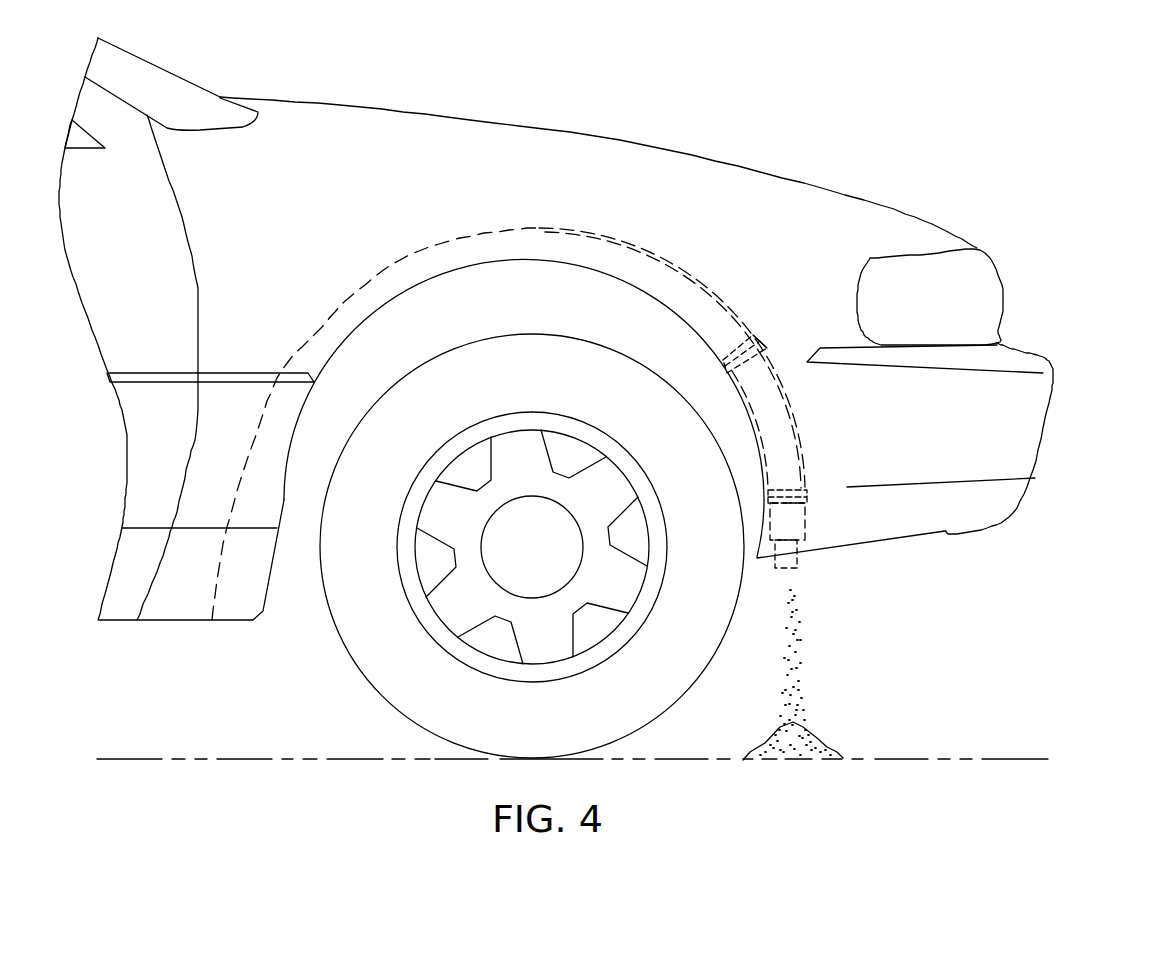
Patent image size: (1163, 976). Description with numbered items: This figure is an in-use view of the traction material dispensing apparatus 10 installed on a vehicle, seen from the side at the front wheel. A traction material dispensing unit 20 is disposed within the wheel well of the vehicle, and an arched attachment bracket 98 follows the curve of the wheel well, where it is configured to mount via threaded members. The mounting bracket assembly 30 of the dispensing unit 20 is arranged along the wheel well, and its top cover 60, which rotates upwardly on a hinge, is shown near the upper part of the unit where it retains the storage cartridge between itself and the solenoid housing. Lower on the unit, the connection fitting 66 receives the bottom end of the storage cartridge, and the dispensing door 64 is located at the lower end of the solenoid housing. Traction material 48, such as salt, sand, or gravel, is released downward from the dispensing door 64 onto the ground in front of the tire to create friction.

The traction material dispensing apparatus 10 is at (810, 277).
The traction material dispensing unit 20 is at (812, 508).
The mounting bracket assembly 30 is at (793, 410).
The traction material 48 is at (821, 742).
The top cover 60 is at (758, 333).
The dispensing door 64 is at (798, 558).
The connection fitting 66 is at (797, 493).
The attachment bracket 98 is at (652, 253).